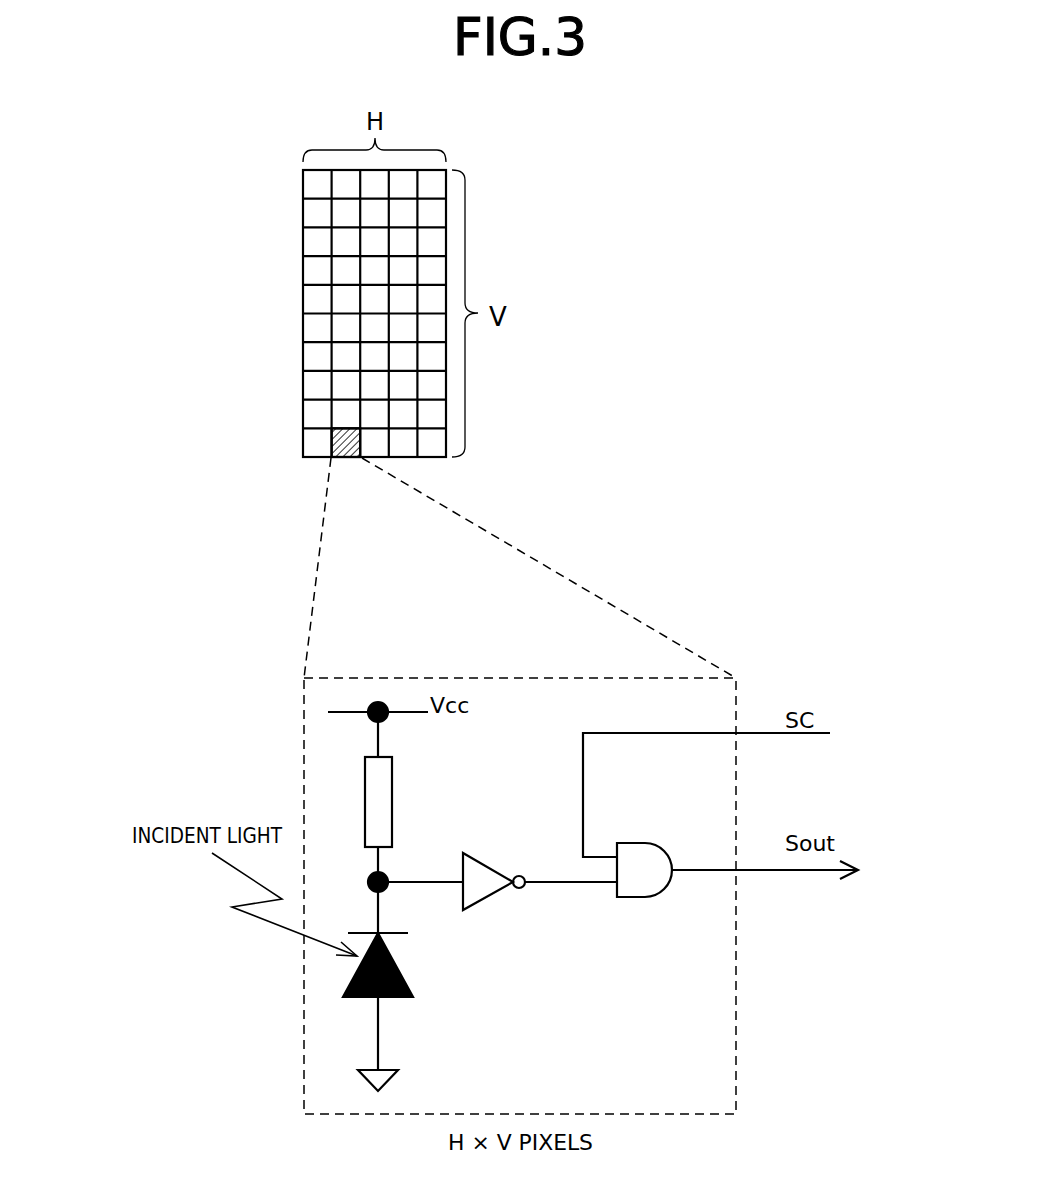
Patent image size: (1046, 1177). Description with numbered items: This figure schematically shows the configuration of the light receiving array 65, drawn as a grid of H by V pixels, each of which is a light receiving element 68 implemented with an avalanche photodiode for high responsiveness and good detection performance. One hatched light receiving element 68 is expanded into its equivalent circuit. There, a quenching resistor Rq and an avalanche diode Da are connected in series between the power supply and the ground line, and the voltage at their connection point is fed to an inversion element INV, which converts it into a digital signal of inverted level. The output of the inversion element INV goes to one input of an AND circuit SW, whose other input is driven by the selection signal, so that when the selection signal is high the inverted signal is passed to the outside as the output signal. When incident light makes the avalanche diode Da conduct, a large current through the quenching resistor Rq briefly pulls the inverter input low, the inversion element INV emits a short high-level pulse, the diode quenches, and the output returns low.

The light receiving array 65 is at (428, 168).
The light receiving element 68 is at (348, 460).
The quenching resistor Rq is at (386, 757).
The inversion element INV is at (490, 897).
The AND circuit SW is at (645, 897).
The avalanche diode Da is at (395, 1000).